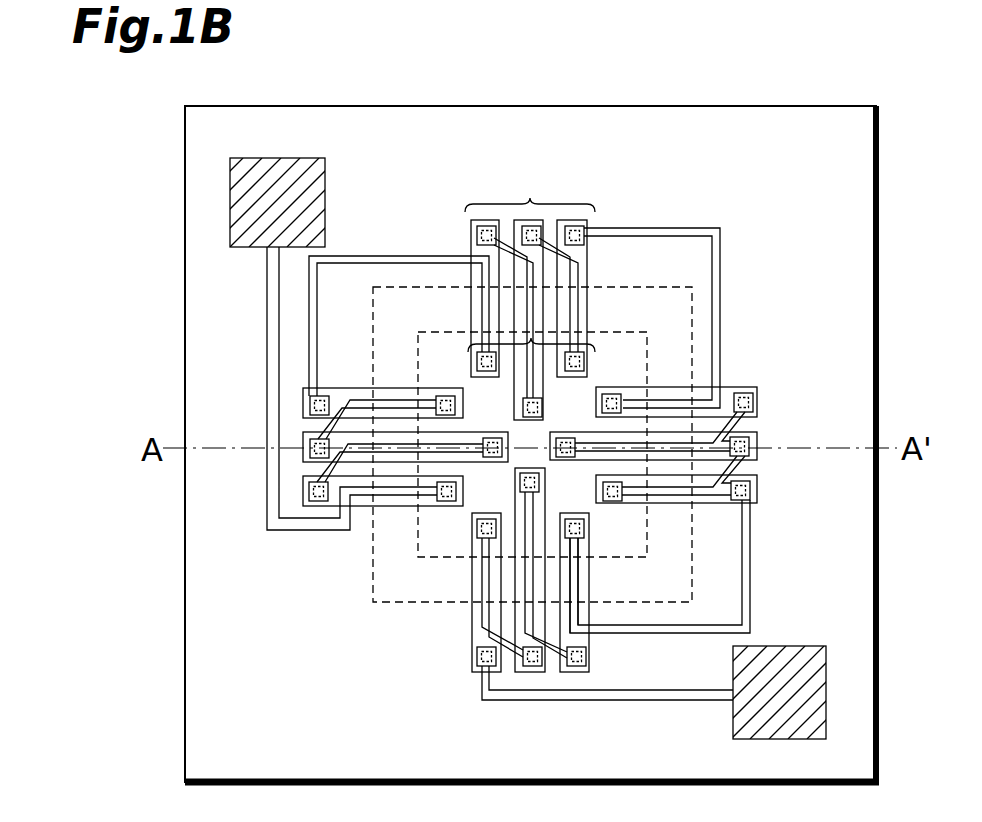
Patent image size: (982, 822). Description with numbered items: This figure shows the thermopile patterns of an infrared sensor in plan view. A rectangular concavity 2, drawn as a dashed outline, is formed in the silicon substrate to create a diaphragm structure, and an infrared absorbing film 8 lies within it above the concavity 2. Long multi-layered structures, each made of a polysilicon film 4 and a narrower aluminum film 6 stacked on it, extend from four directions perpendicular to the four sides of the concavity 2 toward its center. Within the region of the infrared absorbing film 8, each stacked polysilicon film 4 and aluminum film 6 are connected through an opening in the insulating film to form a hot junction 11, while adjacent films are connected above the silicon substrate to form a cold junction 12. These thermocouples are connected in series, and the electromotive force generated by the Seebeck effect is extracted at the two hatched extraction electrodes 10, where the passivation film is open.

The concavity 2 is at (387, 328).
The polysilicon film 4 is at (590, 669).
The aluminum film 6 is at (579, 615).
The infrared absorbing film 8 is at (457, 347).
The extraction electrode 10 is at (228, 214).
The hot junction 11 is at (531, 338).
The cold junction 12 is at (530, 207).